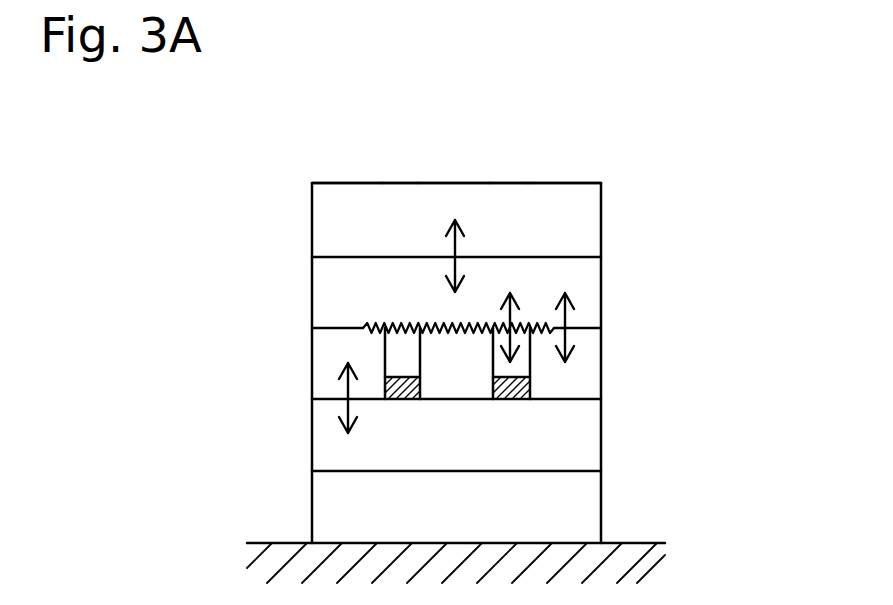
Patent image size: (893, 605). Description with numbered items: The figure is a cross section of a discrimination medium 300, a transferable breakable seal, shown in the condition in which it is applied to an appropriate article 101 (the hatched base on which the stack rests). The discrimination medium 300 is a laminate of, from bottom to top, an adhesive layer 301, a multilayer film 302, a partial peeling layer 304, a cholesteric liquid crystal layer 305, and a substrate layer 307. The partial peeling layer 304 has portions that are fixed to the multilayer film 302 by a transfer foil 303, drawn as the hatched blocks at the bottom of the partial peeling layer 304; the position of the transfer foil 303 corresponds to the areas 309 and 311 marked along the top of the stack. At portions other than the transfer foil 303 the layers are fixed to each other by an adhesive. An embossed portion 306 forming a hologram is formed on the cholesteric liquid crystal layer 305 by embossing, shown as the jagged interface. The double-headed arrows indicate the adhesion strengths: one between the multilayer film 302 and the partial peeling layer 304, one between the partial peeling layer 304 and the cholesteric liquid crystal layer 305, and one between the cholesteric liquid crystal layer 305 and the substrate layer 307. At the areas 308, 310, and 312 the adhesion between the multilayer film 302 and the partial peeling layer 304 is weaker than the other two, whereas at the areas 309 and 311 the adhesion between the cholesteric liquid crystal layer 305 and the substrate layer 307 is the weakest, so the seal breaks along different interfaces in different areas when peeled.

The substrate 101 is at (280, 542).
The discrimination medium 300 is at (533, 340).
The adhesive layer 301 is at (587, 505).
The multilayer film 302 is at (587, 445).
The transfer foil 303 is at (530, 392).
The partial peeling layer 304 is at (565, 364).
The cholesteric liquid crystal layer 305 is at (587, 299).
The embossed portion 306 is at (383, 309).
The substrate layer 307 is at (587, 224).
The area 308 is at (382, 178).
The area 309 is at (418, 178).
The area 310 is at (490, 178).
The area 311 is at (528, 178).
The area 312 is at (601, 178).